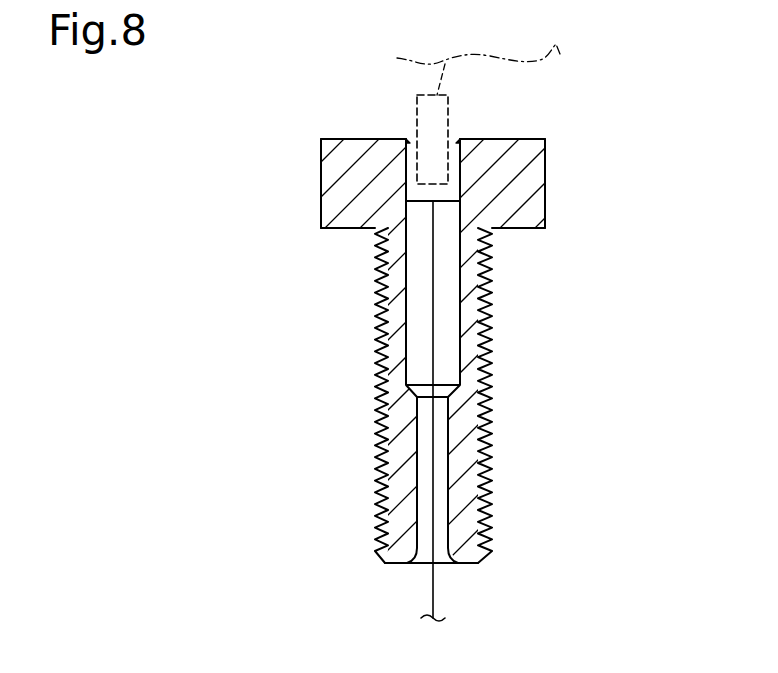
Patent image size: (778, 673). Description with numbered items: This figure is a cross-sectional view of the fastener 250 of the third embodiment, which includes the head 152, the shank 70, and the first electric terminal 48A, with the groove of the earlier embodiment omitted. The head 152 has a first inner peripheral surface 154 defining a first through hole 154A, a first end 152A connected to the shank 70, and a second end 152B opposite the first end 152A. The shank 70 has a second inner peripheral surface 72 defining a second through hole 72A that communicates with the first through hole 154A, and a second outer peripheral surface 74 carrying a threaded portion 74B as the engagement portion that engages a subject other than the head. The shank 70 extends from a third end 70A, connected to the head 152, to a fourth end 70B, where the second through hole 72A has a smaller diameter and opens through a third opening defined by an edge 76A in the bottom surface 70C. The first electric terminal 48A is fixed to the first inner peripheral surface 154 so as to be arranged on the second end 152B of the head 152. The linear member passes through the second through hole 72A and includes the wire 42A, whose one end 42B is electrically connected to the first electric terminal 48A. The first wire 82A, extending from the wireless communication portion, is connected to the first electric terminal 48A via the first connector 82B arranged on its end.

The fastener 250 is at (598, 90).
The shank 70 is at (296, 520).
The third end 70A is at (492, 288).
The fourth end 70B is at (492, 512).
The bottom surface 70C is at (478, 563).
The second inner peripheral surface 72 is at (465, 330).
The second through hole 72A is at (398, 333).
The second outer peripheral surface 74 is at (492, 365).
The threaded portion 74B is at (378, 440).
The edge 76A is at (422, 558).
The head 152 is at (303, 120).
The first end 152A is at (321, 218).
The second end 152B is at (321, 147).
The first inner peripheral surface 154 is at (562, 262).
The first through hole 154A is at (412, 218).
The first electric terminal 48A is at (410, 140).
The wire 42A is at (434, 432).
The one end 42B is at (458, 230).
The first wire 82A is at (455, 66).
The first connector 82B is at (450, 108).